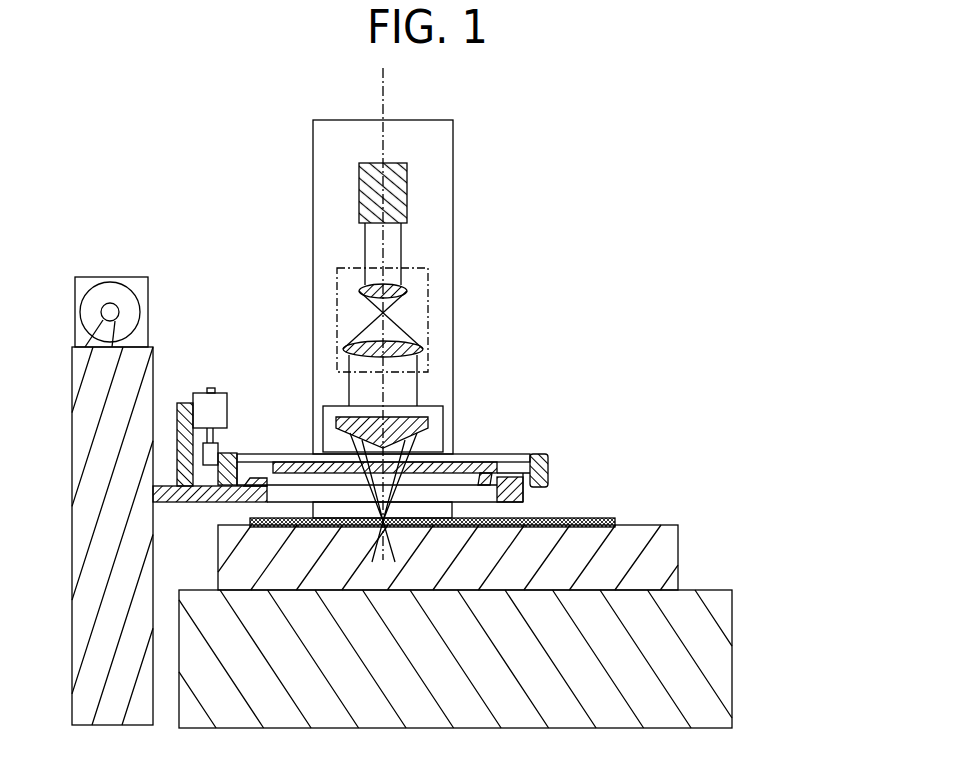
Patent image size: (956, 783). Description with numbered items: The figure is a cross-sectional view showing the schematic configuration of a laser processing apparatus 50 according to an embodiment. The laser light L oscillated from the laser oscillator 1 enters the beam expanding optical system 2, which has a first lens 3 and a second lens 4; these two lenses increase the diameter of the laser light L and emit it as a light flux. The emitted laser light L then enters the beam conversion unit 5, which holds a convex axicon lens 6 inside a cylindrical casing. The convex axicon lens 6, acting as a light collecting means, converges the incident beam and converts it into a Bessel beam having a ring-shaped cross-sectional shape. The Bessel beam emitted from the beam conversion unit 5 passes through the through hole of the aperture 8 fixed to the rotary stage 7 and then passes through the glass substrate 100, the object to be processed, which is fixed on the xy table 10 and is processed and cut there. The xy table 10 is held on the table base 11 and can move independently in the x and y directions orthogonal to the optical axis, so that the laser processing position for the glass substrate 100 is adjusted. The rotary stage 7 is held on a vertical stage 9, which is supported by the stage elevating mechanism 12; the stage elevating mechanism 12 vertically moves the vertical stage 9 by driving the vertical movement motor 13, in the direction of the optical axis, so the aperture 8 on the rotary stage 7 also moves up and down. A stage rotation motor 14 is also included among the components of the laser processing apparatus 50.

The laser oscillator 1 is at (407, 193).
The beam expanding optical system 2 is at (428, 275).
The first lens 3 is at (405, 295).
The second lens 4 is at (418, 355).
The beam conversion unit 5 is at (450, 410).
The convex axicon lens 6 is at (336, 418).
The rotary stage 7 is at (548, 470).
The aperture 8 is at (497, 463).
The vertical stage 9 is at (250, 502).
The xy table 10 is at (678, 568).
The table base 11 is at (732, 666).
The stage elevating mechanism 12 is at (153, 377).
The vertical movement motor 13 is at (132, 277).
The stage rotation motor 14 is at (227, 393).
The laser processing apparatus 50 is at (567, 162).
The glass substrate 100 is at (615, 517).
The laser light L is at (365, 248).